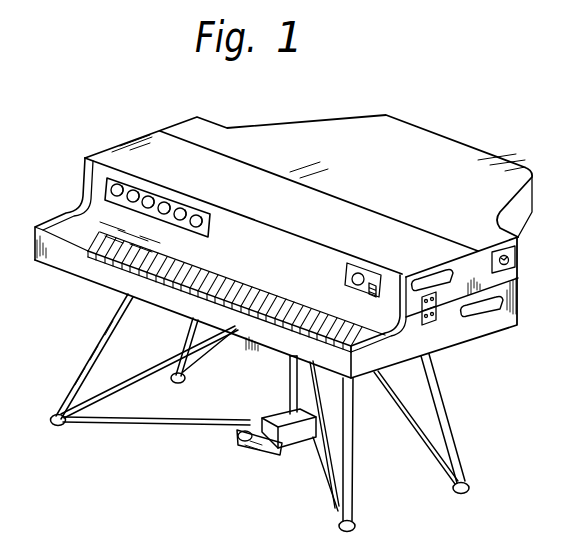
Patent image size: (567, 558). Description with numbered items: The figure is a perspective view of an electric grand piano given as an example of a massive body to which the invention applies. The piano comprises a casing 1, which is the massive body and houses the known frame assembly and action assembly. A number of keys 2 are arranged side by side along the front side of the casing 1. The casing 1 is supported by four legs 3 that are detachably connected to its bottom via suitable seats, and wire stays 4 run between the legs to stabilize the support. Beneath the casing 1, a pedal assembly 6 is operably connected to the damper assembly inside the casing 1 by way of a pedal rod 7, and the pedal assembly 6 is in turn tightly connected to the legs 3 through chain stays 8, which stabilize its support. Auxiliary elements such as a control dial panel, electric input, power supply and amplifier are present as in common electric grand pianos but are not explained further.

The casing 1 is at (341, 130).
The keys 2 is at (113, 263).
The legs 3 is at (81, 378).
The wire stays 4 is at (133, 380).
The pedal assembly 6 is at (236, 429).
The pedal rod 7 is at (289, 374).
The chain stays 8 is at (143, 427).